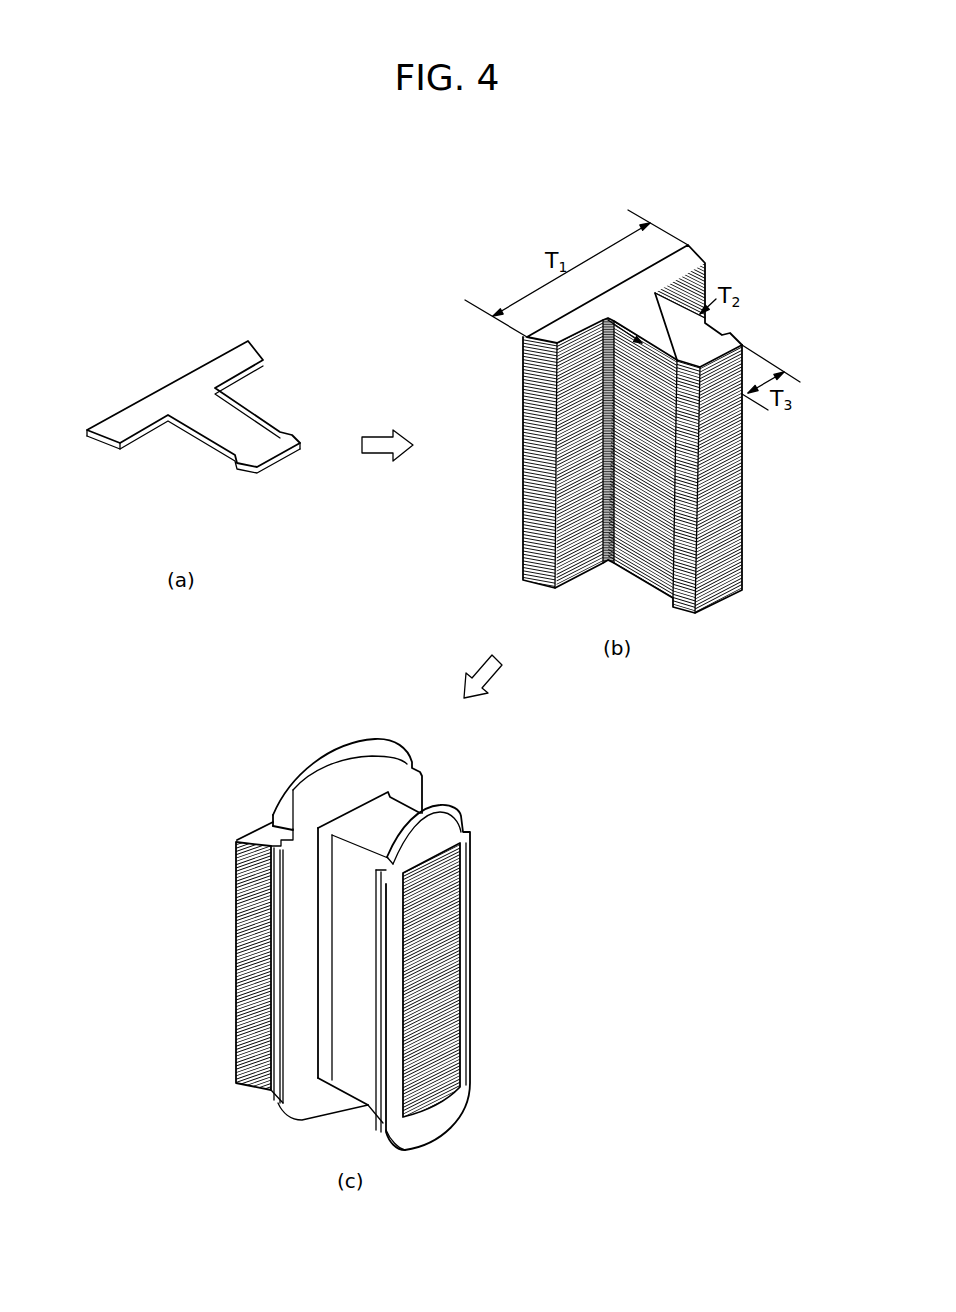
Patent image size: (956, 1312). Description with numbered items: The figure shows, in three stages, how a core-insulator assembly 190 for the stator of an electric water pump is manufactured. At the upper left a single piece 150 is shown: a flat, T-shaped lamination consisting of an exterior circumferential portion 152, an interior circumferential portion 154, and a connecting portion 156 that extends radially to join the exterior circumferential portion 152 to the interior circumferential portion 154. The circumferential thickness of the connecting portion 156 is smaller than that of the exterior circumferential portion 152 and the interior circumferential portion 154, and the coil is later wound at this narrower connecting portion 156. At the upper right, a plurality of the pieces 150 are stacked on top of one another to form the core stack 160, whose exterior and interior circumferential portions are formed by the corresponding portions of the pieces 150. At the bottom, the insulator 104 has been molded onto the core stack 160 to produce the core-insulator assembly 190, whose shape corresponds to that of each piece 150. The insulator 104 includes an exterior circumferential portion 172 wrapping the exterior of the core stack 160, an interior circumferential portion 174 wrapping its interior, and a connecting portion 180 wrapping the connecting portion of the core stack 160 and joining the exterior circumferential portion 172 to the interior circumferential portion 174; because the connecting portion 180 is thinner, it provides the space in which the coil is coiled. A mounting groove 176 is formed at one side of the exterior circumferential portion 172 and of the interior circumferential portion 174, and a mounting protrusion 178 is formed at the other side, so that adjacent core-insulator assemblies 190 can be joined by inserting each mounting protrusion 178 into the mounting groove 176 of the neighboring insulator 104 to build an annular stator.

The piece 150 is at (152, 463).
The exterior circumferential portion 152 is at (150, 397).
The interior circumferential portion 154 is at (268, 467).
The connecting portion 156 is at (235, 415).
The core stack 160 is at (410, 487).
The insulator 104 is at (420, 900).
The exterior circumferential portion 172 is at (333, 901).
The interior circumferential portion 174 is at (420, 812).
The mounting groove 176 is at (467, 830).
The mounting protrusion 178 is at (372, 957).
The connecting portion 180 is at (348, 826).
The core-insulator assembly 190 is at (420, 900).